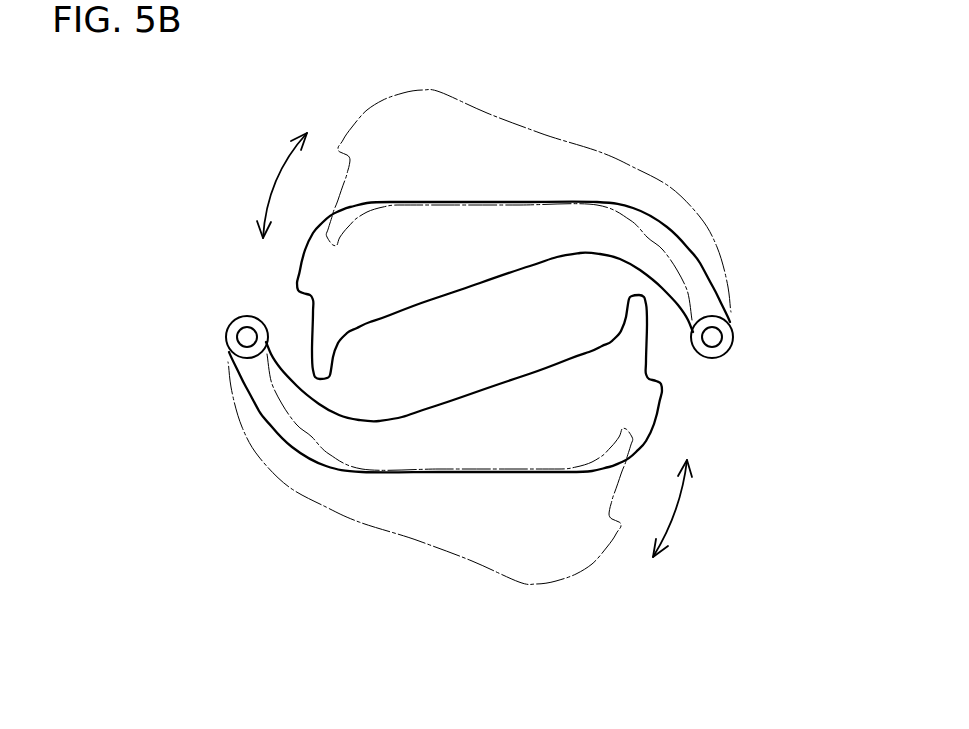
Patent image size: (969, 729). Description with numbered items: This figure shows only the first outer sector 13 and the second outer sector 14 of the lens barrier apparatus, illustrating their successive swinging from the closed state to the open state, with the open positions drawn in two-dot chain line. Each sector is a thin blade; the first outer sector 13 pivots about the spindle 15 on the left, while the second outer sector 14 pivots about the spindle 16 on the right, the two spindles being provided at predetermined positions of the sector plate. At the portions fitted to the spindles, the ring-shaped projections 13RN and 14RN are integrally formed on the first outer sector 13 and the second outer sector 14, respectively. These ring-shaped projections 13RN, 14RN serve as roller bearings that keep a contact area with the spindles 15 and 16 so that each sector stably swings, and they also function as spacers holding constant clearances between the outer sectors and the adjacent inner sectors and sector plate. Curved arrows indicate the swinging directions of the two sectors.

The first outer sector 13 is at (647, 403).
The second outer sector 14 is at (475, 122).
The ring-shaped projection 13RN is at (230, 335).
The ring-shaped projection 14RN is at (724, 338).
The spindle 15 is at (245, 335).
The spindle 16 is at (712, 340).